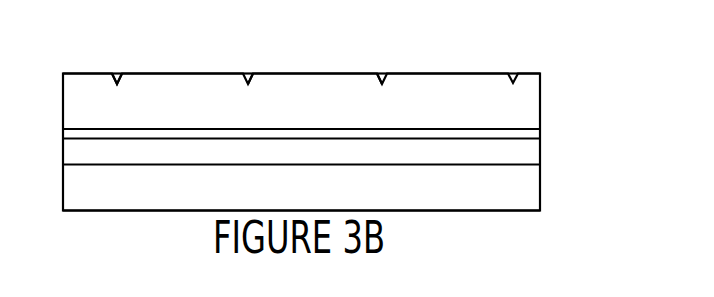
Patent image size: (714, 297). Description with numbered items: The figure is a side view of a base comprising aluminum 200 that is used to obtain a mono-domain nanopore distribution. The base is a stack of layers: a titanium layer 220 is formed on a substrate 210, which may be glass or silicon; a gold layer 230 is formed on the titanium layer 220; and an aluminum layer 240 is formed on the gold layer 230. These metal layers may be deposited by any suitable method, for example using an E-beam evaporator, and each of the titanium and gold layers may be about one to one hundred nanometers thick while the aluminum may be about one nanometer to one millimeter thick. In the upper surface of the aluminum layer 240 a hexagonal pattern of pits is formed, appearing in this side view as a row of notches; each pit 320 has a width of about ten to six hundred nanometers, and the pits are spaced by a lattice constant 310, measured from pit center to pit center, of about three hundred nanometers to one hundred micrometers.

The base comprising aluminum 200 is at (60, 74).
The substrate 210 is at (530, 184).
The titanium layer 220 is at (530, 151).
The gold layer 230 is at (530, 130).
The aluminum layer 240 is at (530, 99).
The lattice constant 310 is at (382, 64).
The pit 320 is at (121, 60).